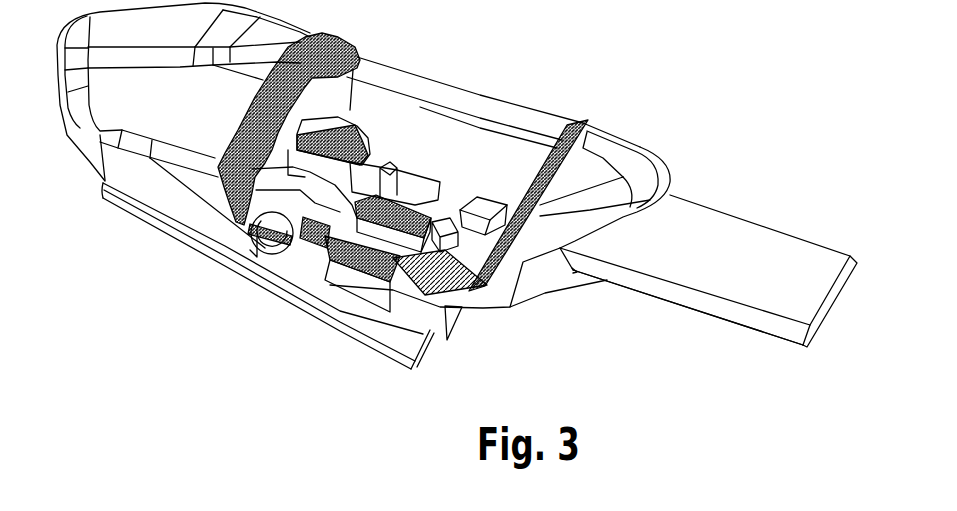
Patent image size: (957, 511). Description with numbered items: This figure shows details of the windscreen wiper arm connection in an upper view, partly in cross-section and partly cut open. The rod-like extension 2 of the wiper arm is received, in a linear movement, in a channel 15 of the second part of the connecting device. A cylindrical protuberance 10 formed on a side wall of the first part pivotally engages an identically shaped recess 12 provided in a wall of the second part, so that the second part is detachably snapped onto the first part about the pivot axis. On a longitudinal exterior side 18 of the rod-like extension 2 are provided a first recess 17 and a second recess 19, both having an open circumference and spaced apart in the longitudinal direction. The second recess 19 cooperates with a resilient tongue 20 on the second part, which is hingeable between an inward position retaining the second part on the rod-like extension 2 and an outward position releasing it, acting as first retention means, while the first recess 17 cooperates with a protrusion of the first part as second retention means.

The rod-like extension 2 is at (757, 243).
The cylindrical protuberance 10 is at (258, 228).
The recess 12 is at (312, 228).
The channel 15 is at (479, 138).
The first recess 17 is at (483, 212).
The longitudinal exterior side 18 is at (753, 318).
The second recess 19 is at (418, 186).
The resilient tongue 20 is at (407, 192).